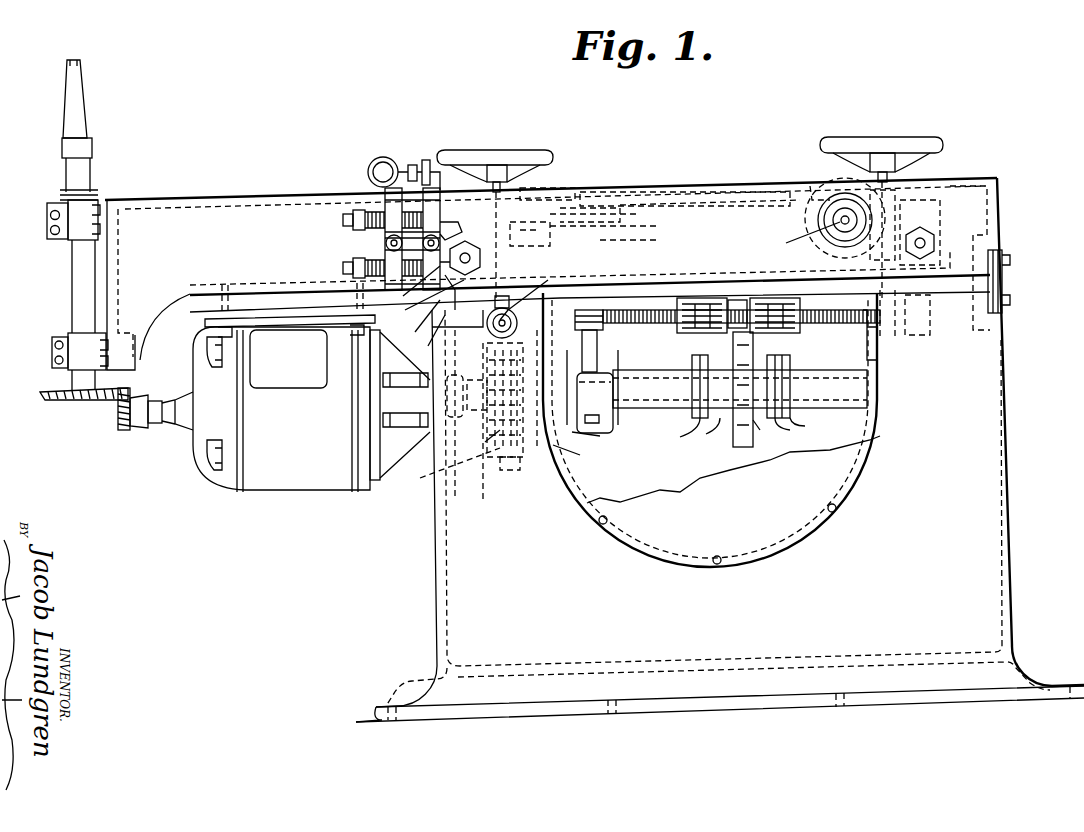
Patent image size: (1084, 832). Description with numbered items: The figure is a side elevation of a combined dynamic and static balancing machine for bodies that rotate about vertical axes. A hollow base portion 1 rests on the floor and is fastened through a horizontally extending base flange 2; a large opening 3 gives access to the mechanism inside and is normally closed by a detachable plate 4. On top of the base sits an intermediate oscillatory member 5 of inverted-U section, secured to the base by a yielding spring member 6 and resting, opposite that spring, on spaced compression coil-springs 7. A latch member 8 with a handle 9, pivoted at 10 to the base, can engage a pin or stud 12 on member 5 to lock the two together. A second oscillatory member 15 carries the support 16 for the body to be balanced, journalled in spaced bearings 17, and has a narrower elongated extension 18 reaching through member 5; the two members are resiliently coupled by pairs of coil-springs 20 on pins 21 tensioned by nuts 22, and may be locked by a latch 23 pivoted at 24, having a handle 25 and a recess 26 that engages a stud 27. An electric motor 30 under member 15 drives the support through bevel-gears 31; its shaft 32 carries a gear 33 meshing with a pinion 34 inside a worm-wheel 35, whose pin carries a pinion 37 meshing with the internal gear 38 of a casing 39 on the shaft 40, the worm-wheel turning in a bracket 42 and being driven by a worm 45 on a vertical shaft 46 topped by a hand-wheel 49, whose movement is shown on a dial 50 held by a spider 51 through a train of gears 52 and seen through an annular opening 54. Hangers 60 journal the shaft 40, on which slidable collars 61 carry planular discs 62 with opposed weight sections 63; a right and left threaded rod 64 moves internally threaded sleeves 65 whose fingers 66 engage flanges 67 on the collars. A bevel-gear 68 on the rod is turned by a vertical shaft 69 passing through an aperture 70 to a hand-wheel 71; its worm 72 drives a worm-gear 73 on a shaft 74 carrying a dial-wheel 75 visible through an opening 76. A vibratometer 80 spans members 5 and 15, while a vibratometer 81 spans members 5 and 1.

The hollow base portion 1 is at (1006, 508).
The base flange 2 is at (463, 712).
The opening 3 is at (577, 498).
The detachable plate 4 is at (870, 112).
The intermediate oscillatory member 5 is at (697, 190).
The yielding spring member 6 is at (1003, 278).
The compression coil-spring 7 is at (457, 337).
The latch member 8 is at (420, 323).
The handle 9 is at (412, 288).
The pivot 10 is at (427, 338).
The pin or stud 12 is at (423, 303).
The second oscillatory member 15 is at (174, 285).
The support 16 is at (88, 167).
The bearing 17 is at (78, 238).
The elongated extension 18 is at (727, 192).
The coil-spring 20 is at (386, 232).
The pin 21 is at (342, 220).
The nut 22 is at (380, 196).
The latch 23 is at (458, 230).
The pivot 24 is at (386, 250).
The handle 25 is at (468, 250).
The recess 26 is at (438, 242).
The pin or stud 27 is at (405, 244).
The electric motor 30 is at (311, 409).
The bevel-gear 31 is at (116, 418).
The motor shaft 32 is at (160, 418).
The gear 33 is at (483, 441).
The pinion 34 is at (459, 386).
The worm-wheel 35 is at (520, 470).
The pinion 37 is at (514, 317).
The internal gear 38 is at (570, 457).
The casing 39 is at (584, 442).
The shaft 40 is at (572, 360).
The bracket 42 is at (496, 422).
The worm 45 is at (446, 469).
The vertical shaft 46 is at (528, 190).
The hand-wheel 49 is at (505, 152).
The dial 50 is at (612, 190).
The yoke or spider 51 is at (605, 231).
The train of gears 52 is at (530, 239).
The annular opening 54 is at (660, 190).
The hanger 60 is at (603, 347).
The collar 61 is at (761, 434).
The planular disc 62 is at (741, 386).
The weight section 63 is at (733, 349).
The right and left threaded rod 64 is at (660, 306).
The internally threaded sleeve 65 is at (738, 308).
The finger 66 is at (690, 389).
The radial flange 67 is at (690, 430).
The bevel-gear 68 is at (912, 312).
The vertical shaft 69 is at (920, 233).
The aperture 70 is at (905, 195).
The hand-wheel 71 is at (916, 140).
The worm 72 is at (950, 186).
The worm-gear 73 is at (805, 220).
The shaft 74 is at (800, 238).
The dial-wheel 75 is at (840, 190).
The opening 76 is at (812, 186).
The vibratometer 80 is at (390, 164).
The vibratometer 81 is at (527, 291).